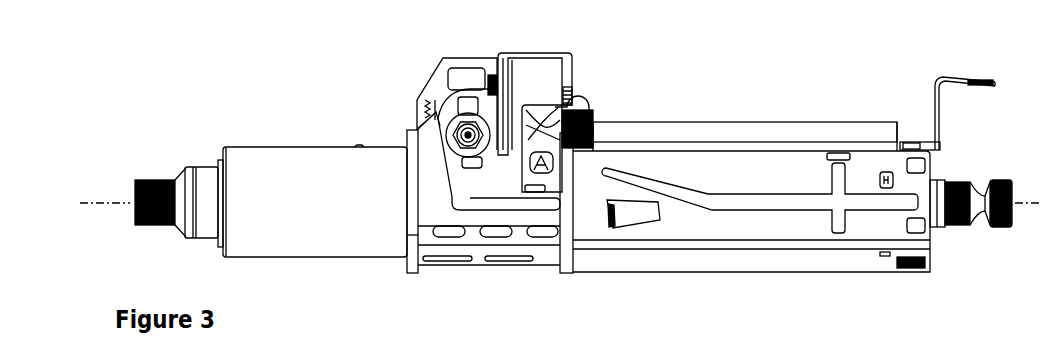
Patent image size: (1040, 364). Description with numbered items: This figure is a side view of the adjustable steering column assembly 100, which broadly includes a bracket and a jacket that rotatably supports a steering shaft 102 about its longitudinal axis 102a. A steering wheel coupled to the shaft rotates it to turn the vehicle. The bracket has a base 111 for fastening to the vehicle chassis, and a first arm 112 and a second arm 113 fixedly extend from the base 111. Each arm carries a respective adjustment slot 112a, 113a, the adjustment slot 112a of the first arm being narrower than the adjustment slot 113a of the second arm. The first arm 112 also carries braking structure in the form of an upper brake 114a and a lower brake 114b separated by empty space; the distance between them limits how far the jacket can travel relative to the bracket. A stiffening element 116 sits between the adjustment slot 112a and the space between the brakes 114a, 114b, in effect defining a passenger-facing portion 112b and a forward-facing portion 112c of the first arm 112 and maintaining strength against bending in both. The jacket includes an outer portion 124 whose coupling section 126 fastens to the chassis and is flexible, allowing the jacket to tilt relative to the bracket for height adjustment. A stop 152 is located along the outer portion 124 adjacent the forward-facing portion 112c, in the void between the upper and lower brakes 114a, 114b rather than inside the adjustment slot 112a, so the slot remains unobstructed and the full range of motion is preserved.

The adjustable steering column assembly 100 is at (697, 44).
The steering shaft 102 is at (190, 148).
The longitudinal axis 102a is at (93, 203).
The base 111 is at (533, 58).
The first arm 112 is at (534, 78).
The adjustment slot 112a is at (458, 103).
The passenger-facing portion 112b is at (463, 176).
The forward-facing portion 112c is at (515, 180).
The second arm 113 is at (474, 56).
The adjustment slot 113a is at (455, 62).
The upper brake 114a is at (545, 107).
The lower brake 114b is at (542, 190).
The stiffening element 116 is at (499, 150).
The outer portion 124 is at (812, 116).
The coupling section 126 is at (967, 72).
The stop 152 is at (555, 178).